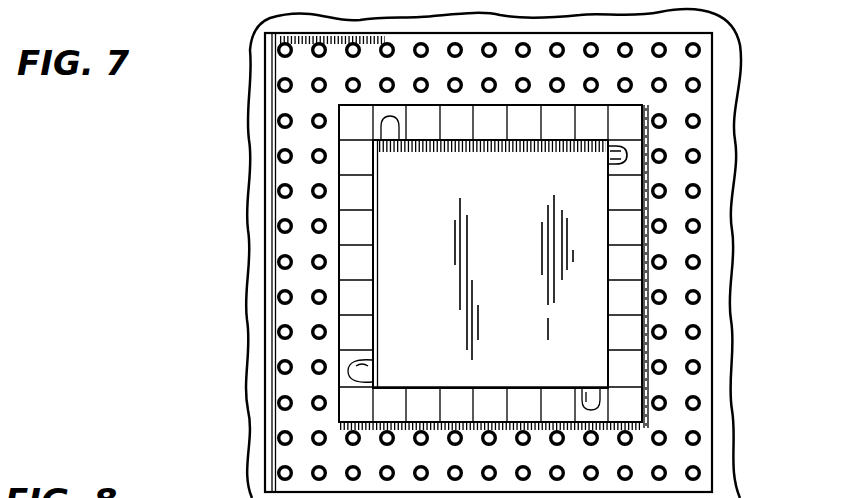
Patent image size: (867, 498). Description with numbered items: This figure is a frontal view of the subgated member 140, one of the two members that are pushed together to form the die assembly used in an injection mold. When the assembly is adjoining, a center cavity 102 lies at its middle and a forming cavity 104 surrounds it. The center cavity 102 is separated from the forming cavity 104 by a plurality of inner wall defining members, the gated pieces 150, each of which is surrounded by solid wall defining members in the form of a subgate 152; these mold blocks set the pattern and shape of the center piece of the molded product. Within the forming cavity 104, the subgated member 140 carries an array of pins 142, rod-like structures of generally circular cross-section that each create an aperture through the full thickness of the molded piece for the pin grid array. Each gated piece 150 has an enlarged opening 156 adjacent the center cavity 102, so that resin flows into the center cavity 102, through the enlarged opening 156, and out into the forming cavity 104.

The center cavity 102 is at (405, 198).
The forming cavity 104 is at (305, 71).
The subgated member 140 is at (228, 276).
The pin 142 is at (700, 297).
The gated piece 150 is at (633, 168).
The subgate 152 is at (630, 272).
The enlarged opening 156 is at (608, 160).